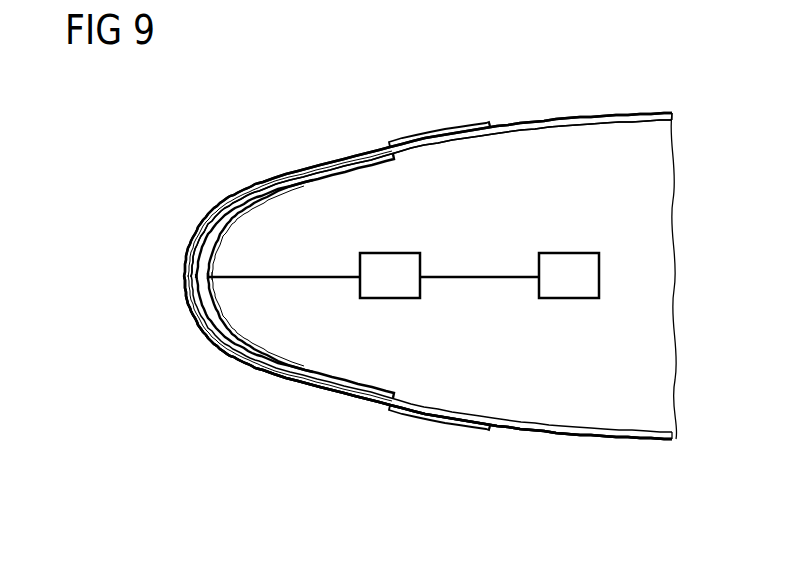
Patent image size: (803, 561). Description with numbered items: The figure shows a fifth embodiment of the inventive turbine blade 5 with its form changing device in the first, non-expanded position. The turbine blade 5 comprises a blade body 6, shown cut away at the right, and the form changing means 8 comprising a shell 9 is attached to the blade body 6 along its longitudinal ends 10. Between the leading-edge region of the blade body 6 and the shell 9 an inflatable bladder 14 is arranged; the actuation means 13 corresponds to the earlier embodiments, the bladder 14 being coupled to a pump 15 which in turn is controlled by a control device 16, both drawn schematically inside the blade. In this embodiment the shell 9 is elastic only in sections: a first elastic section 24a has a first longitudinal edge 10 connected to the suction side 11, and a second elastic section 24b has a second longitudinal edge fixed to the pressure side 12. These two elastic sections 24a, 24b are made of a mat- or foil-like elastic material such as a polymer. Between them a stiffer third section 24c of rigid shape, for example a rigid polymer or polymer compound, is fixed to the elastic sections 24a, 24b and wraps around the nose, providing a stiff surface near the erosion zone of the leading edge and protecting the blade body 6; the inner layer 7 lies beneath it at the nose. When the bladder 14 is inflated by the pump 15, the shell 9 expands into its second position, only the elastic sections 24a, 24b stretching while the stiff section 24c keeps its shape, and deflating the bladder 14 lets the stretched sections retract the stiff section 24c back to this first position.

The turbine blade 5 is at (277, 408).
The blade body 6 is at (628, 441).
The inner layer 7 is at (220, 262).
The form changing means 8 is at (176, 308).
The shell 9 is at (197, 242).
The longitudinal ends 10 is at (482, 122).
The suction side 11 is at (578, 112).
The pressure side 12 is at (573, 435).
The actuation means 13 is at (293, 310).
The inflatable bladder 14 is at (200, 268).
The pump 15 is at (386, 253).
The control device 16 is at (566, 253).
The first elastic section 24a is at (424, 138).
The second elastic section 24b is at (420, 417).
The third section 24c is at (285, 185).